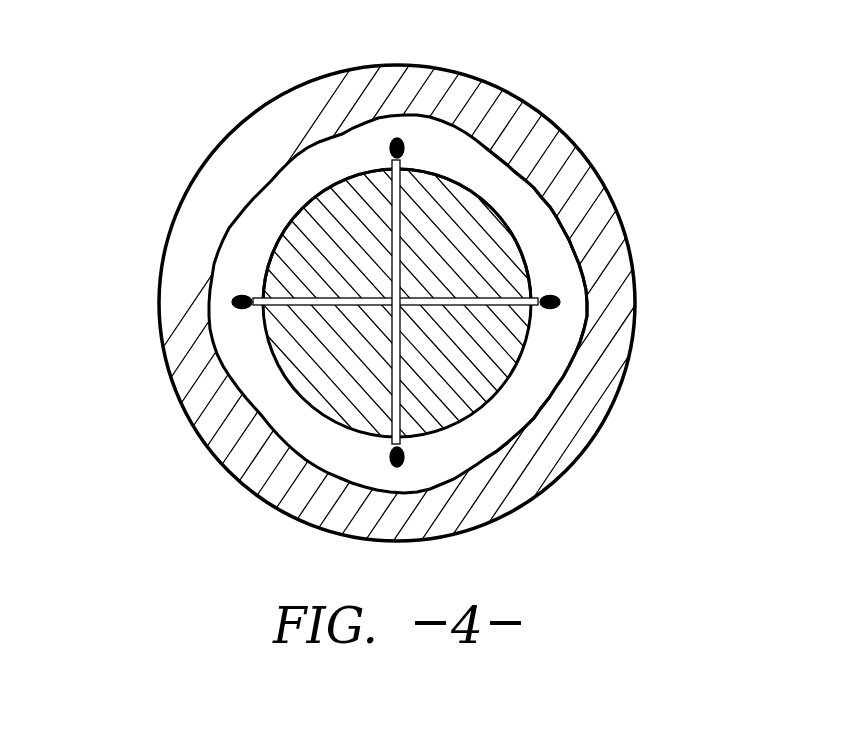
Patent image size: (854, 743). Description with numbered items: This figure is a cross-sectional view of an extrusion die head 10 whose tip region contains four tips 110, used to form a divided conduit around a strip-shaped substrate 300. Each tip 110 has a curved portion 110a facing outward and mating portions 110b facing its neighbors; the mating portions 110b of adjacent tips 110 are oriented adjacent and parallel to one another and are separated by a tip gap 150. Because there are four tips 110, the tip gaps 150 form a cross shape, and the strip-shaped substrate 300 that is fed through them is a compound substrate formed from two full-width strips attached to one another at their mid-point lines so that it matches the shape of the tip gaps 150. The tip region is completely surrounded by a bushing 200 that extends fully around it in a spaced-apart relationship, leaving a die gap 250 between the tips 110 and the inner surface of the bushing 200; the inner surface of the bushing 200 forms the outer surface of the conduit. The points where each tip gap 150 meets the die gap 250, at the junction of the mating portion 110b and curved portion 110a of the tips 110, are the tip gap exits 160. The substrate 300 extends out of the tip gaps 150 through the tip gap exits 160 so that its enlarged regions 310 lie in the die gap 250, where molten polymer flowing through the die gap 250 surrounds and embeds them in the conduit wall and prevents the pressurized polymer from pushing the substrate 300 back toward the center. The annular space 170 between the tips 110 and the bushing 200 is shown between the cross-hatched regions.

The extrusion die head 10 is at (433, 278).
The tips 110 is at (478, 364).
The curved portion 110a is at (352, 177).
The mating portion 110b is at (380, 175).
The tip gap 150 is at (495, 300).
The tip gap exits 160 is at (407, 165).
The annular gap 170 is at (315, 195).
The bushing 200 is at (553, 428).
The die gap 250 is at (545, 363).
The strip-shaped substrate 300 is at (548, 303).
The enlarged regions 310 is at (552, 292).